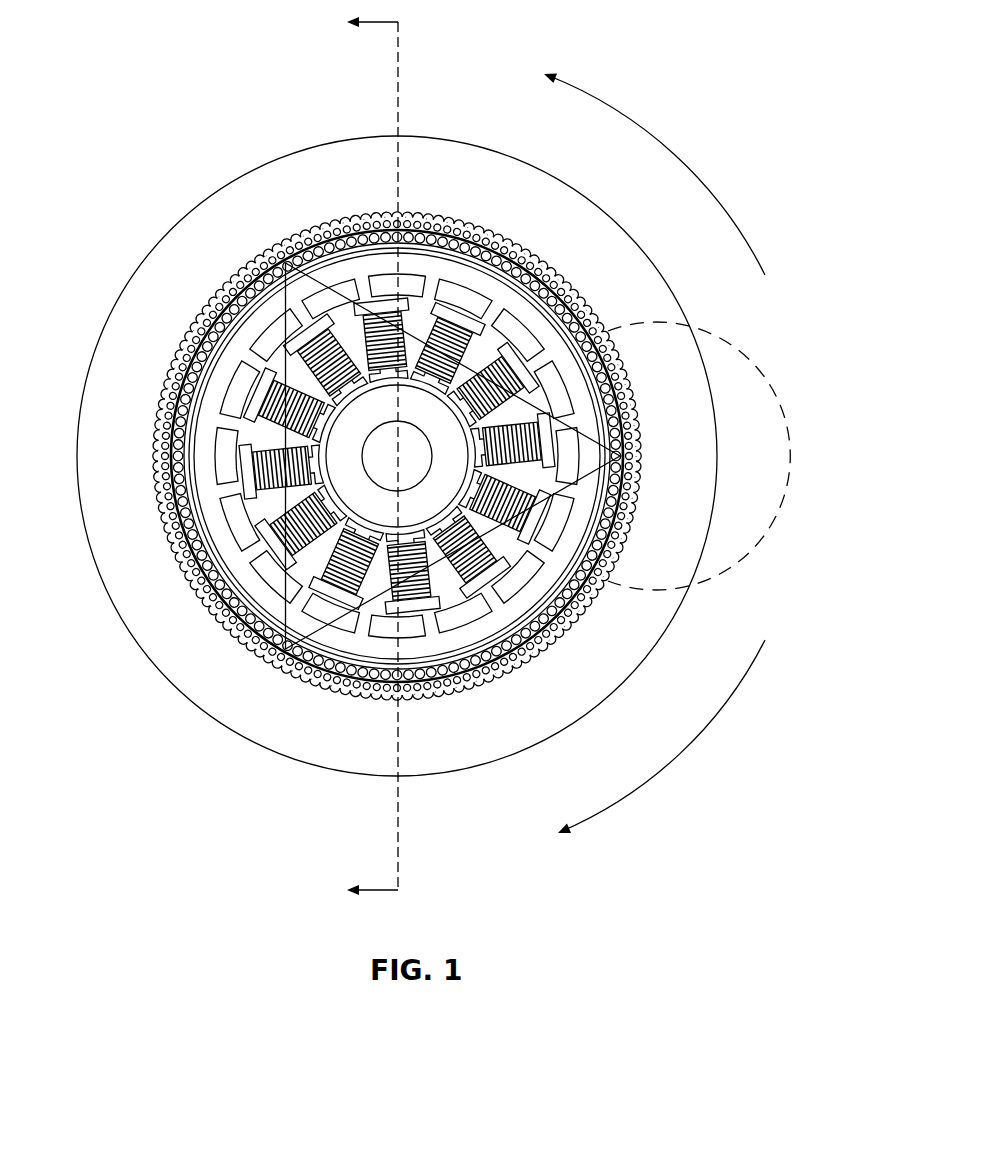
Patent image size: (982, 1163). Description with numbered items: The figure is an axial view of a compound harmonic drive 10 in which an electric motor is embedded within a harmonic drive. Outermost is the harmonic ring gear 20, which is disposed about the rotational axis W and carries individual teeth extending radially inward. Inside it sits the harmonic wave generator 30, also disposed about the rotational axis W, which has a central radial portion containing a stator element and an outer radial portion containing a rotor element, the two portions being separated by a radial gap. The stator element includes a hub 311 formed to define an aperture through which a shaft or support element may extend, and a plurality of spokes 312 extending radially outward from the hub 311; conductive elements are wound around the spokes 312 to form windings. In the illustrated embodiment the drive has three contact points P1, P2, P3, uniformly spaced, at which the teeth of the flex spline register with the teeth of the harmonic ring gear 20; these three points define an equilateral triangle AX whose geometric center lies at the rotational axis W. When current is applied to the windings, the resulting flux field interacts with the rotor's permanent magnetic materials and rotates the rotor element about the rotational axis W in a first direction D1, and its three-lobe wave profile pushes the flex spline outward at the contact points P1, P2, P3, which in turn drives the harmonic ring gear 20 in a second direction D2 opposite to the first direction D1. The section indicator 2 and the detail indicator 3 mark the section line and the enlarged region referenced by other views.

The compound harmonic drive 10 is at (151, 121).
The harmonic ring gear 20 is at (92, 538).
The harmonic wave generator 30 is at (560, 580).
The hub 311 is at (497, 238).
The spokes 312 is at (512, 277).
The rotational axis W is at (263, 527).
The equilateral triangle AX is at (313, 467).
The first contact point P1 is at (622, 457).
The second contact point P2 is at (284, 651).
The third contact point P3 is at (284, 262).
The first direction D1 is at (767, 274).
The second direction D2 is at (767, 644).
The section line 2- 2 is at (362, 456).
The detail region of FIG. 3 is at (741, 349).